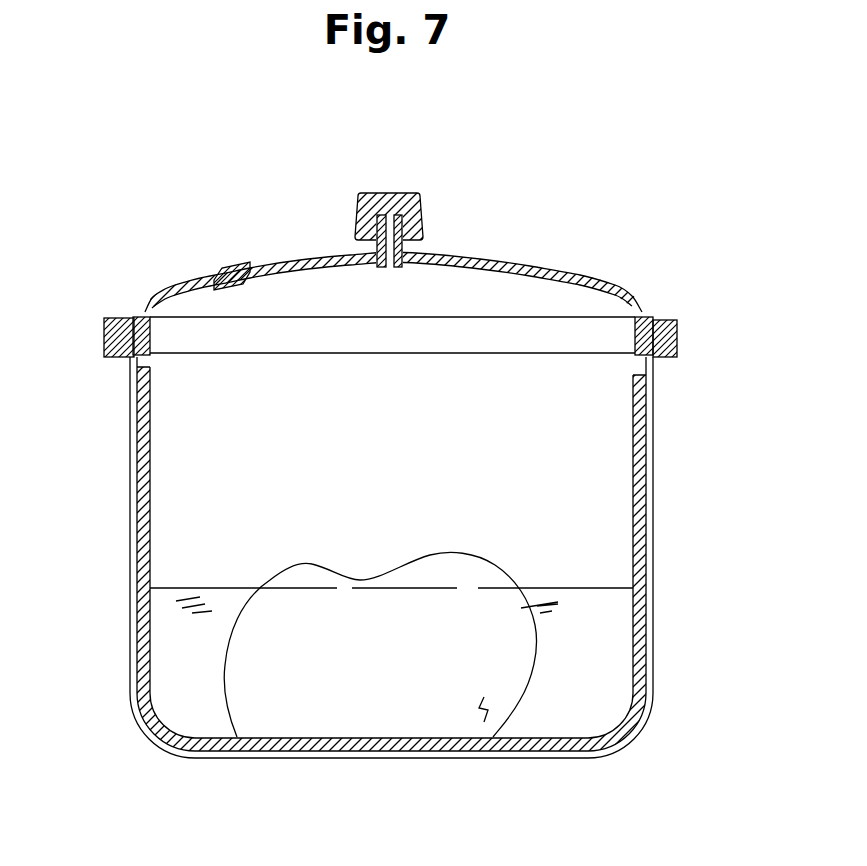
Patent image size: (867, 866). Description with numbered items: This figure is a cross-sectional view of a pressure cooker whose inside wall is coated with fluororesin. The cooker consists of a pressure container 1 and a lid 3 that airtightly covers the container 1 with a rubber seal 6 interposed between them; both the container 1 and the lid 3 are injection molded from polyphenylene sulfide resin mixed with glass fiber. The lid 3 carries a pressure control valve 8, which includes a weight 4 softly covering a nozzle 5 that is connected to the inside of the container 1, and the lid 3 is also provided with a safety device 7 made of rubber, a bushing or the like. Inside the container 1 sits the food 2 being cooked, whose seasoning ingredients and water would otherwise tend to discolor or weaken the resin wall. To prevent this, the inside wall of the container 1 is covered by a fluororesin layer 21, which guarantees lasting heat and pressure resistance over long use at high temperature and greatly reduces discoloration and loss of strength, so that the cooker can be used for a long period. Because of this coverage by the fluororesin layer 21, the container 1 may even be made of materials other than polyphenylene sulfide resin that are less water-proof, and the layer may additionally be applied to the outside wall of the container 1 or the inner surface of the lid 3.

The pressure container 1 is at (170, 763).
The food 2 is at (388, 712).
The lid 3 is at (538, 267).
The weight 4 is at (406, 193).
The nozzle 5 is at (374, 195).
The rubber seal 6 is at (135, 305).
The safety device 7 is at (232, 266).
The pressure control valve 8 is at (413, 184).
The fluororesin layer 21 is at (654, 453).